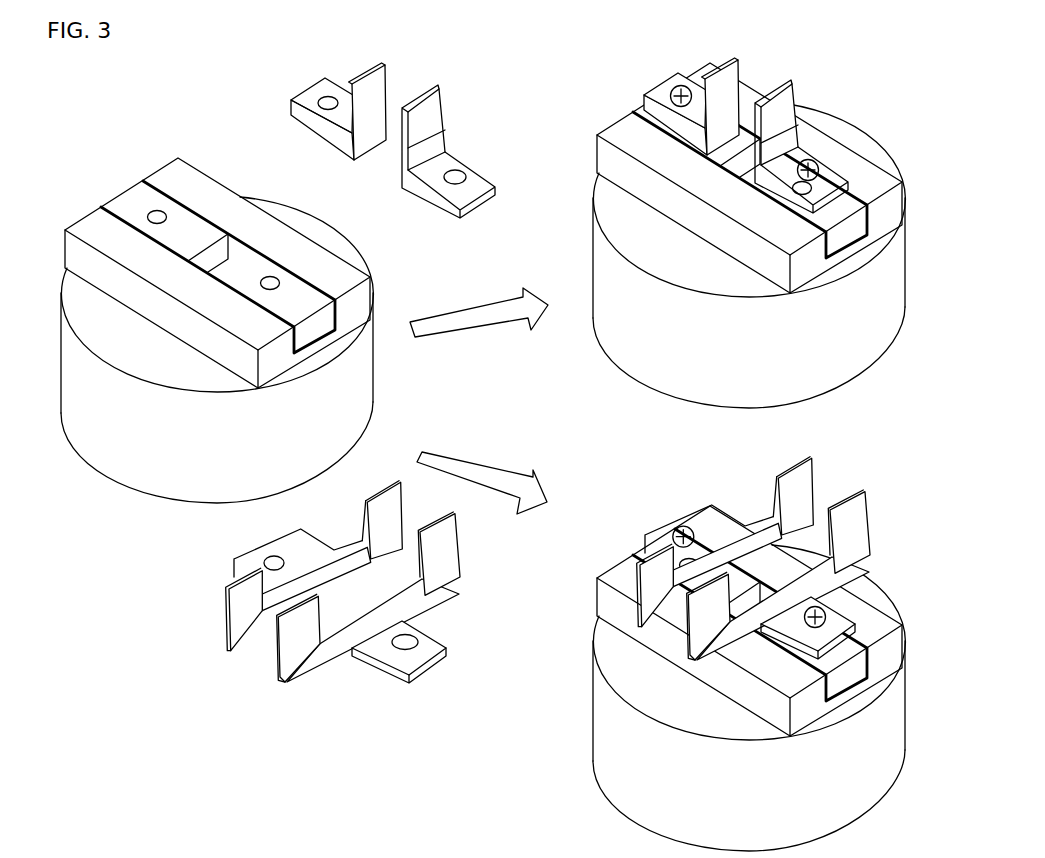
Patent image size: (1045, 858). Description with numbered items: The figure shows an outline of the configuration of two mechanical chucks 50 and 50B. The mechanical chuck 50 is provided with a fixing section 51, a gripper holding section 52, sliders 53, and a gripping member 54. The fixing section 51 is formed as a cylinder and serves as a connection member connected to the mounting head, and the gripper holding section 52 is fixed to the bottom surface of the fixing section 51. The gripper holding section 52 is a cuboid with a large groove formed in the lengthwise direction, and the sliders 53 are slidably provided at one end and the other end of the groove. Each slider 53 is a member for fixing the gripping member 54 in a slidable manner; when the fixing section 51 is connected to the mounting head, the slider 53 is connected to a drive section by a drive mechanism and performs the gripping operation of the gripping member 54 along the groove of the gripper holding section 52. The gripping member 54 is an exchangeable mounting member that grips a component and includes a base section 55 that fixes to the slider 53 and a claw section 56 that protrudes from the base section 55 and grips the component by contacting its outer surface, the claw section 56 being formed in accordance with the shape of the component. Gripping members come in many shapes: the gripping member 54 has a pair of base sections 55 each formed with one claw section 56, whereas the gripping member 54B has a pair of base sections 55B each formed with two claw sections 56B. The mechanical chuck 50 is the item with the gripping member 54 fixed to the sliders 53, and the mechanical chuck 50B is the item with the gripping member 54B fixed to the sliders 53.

The mechanical chuck 50 is at (825, 80).
The mechanical chuck 50B is at (836, 468).
The fixing section 51 is at (375, 397).
The gripper holding section 52 is at (313, 238).
The slider 53 is at (183, 222).
The gripping member 54 is at (341, 110).
The gripping member 54B is at (191, 563).
The base section 55 is at (293, 115).
The base section 55B is at (373, 673).
The claw section 56 is at (388, 67).
The claw section 56B is at (270, 670).